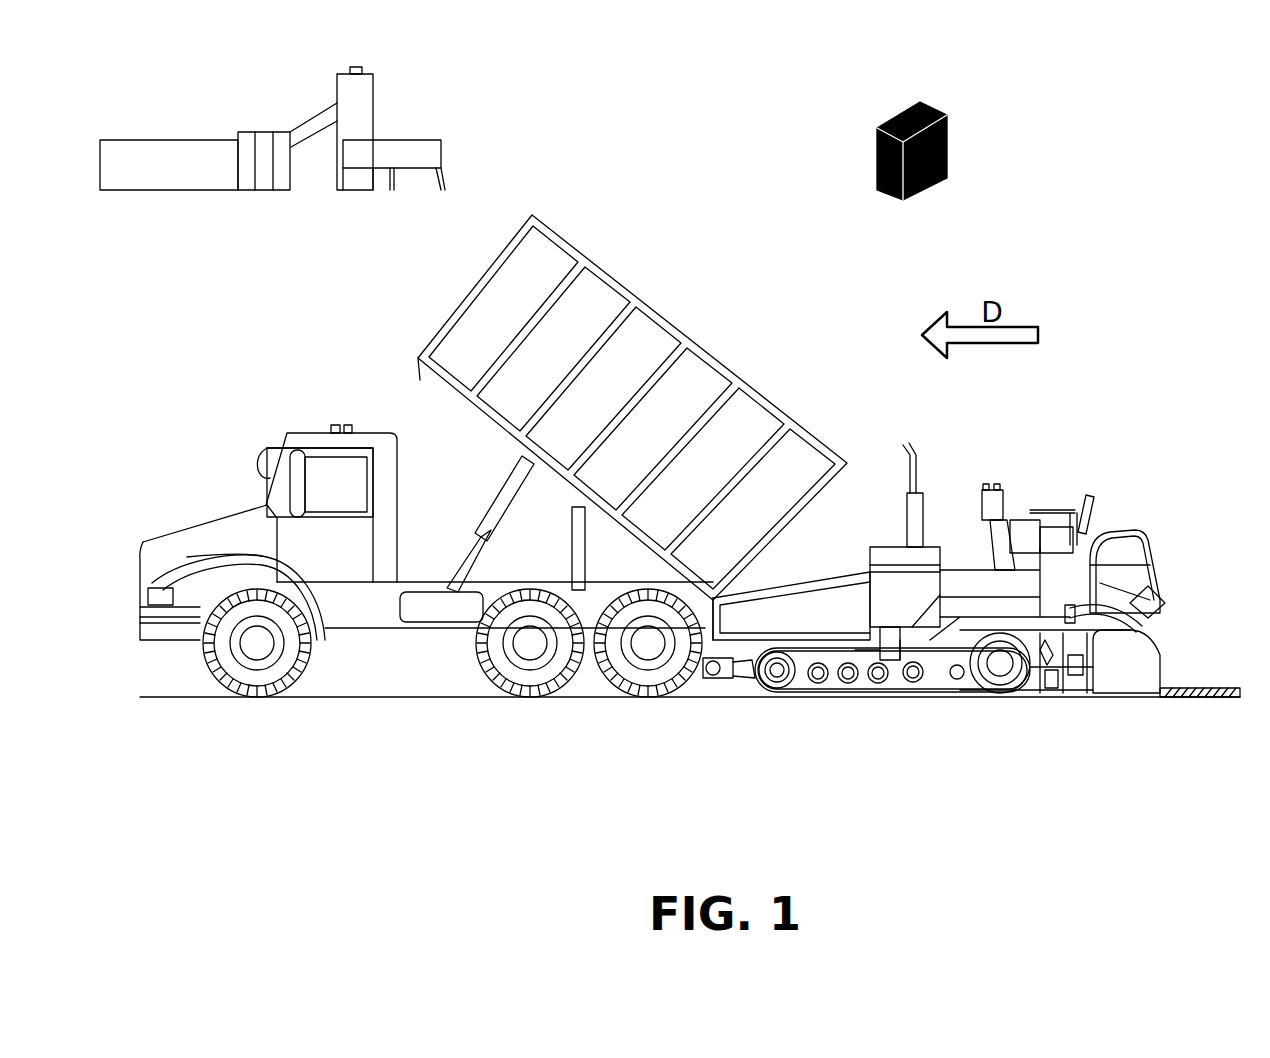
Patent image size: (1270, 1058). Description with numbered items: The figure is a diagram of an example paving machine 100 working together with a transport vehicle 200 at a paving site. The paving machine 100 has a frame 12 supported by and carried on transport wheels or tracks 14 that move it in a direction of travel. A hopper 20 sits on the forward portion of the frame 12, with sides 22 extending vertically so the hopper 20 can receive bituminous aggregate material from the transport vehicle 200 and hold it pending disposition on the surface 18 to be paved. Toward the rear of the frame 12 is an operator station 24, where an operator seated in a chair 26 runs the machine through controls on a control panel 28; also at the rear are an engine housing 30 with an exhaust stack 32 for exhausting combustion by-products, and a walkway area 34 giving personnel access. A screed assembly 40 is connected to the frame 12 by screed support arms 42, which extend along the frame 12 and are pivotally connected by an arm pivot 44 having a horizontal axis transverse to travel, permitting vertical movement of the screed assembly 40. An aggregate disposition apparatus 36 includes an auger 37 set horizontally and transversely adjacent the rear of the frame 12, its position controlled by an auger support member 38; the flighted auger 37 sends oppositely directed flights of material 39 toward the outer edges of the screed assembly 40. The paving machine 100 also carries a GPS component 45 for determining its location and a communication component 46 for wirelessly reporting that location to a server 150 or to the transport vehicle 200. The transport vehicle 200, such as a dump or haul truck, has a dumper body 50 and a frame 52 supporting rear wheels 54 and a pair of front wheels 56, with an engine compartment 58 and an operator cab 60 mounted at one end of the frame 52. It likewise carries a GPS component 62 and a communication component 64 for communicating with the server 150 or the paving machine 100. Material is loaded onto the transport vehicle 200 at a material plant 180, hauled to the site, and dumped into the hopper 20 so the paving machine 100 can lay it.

The paving machine 100 is at (1045, 402).
The frame 12 is at (738, 680).
The transport wheels or tracks 14 is at (772, 676).
The surface 18 is at (413, 700).
The hopper 20 is at (817, 578).
The sides 22 is at (845, 615).
The operator station 24 is at (1058, 515).
The chair 26 is at (1090, 508).
The control panel 28 is at (1003, 503).
The engine housing 30 is at (880, 545).
The exhaust stack 32 is at (906, 445).
The walkway area 34 is at (957, 570).
The aggregate disposition apparatus 36 is at (1045, 640).
The auger 37 is at (1055, 662).
The auger support member 38 is at (1058, 640).
The material 39 is at (1200, 698).
The screed assembly 40 is at (1160, 650).
The screed support arms 42 is at (1003, 625).
The arm pivot 44 is at (913, 672).
The GPS component 45 is at (996, 490).
The communication component 46 is at (985, 490).
The dumper body 50 is at (714, 320).
The frame 52 is at (365, 617).
The rear wheels 54 is at (535, 697).
The front wheels 56 is at (256, 697).
The engine compartment 58 is at (186, 540).
The operator cab 60 is at (335, 482).
The GPS component 62 is at (346, 428).
The communication component 64 is at (334, 428).
The server 150 is at (947, 150).
The material plant 180 is at (441, 150).
The transport vehicle 200 is at (215, 415).